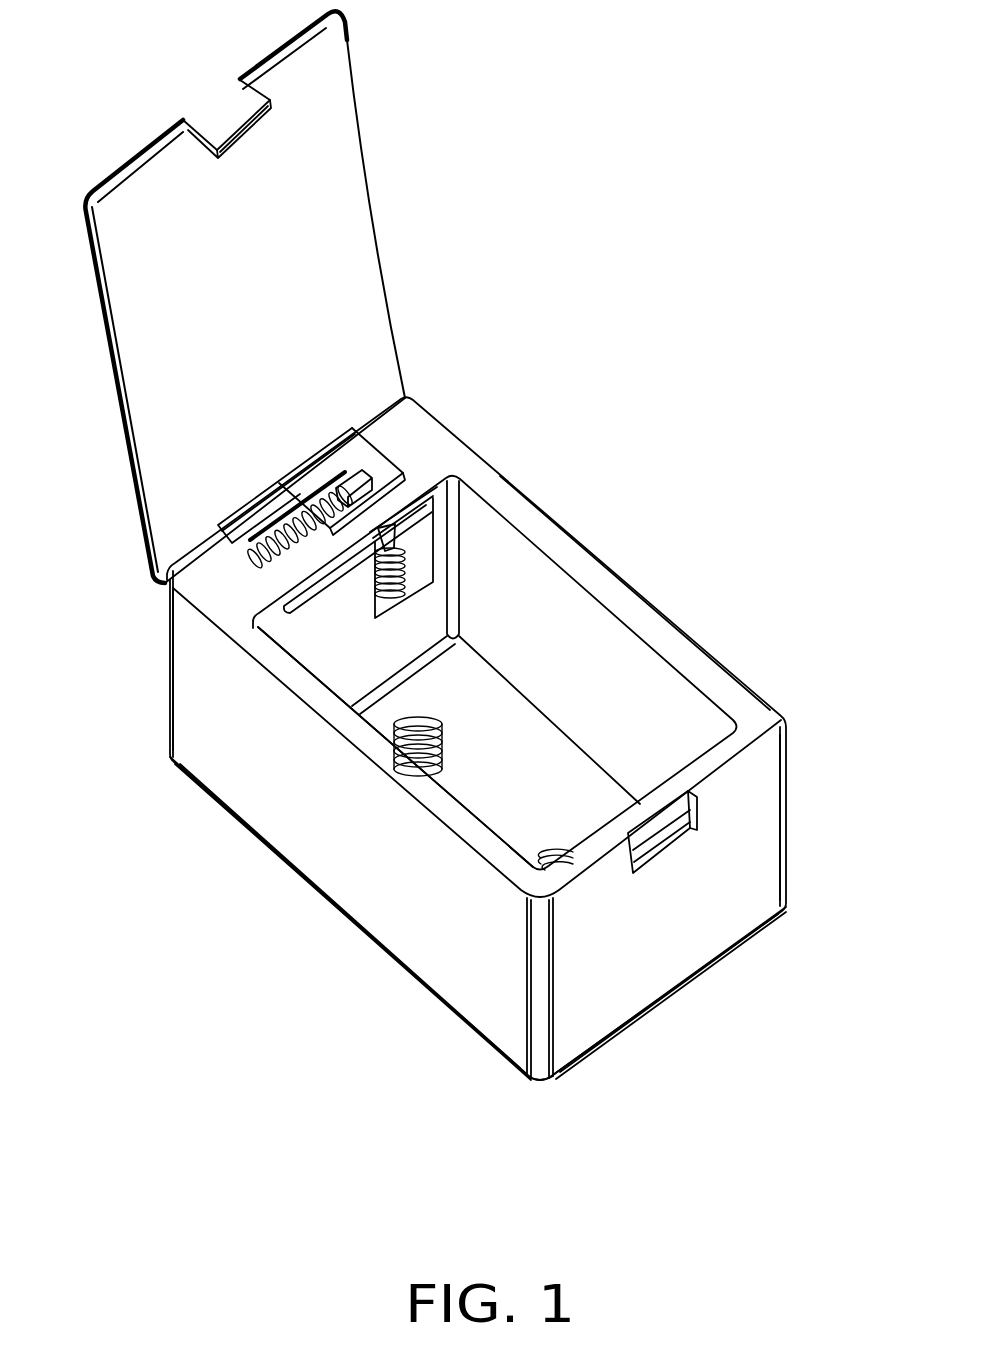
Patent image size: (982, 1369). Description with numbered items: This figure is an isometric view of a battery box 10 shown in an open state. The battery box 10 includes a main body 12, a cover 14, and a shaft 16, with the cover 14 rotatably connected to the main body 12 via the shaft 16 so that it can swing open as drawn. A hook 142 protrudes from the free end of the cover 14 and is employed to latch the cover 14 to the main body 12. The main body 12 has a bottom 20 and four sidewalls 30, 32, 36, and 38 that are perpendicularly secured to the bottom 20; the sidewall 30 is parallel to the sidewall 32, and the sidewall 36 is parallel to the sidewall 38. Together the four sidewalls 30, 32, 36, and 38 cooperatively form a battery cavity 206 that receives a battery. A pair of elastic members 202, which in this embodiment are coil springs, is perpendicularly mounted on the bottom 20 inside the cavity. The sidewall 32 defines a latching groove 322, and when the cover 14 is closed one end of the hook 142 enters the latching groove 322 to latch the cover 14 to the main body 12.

The battery box 10 is at (697, 180).
The main body 12 is at (483, 550).
The cover 14 is at (321, 368).
The hook 142 is at (217, 122).
The shaft 16 is at (334, 439).
The bottom 20 is at (527, 790).
The elastic members 202 is at (430, 728).
The battery cavity 206 is at (487, 776).
The sidewall 30 is at (230, 594).
The sidewall 32 is at (600, 987).
The latching groove 322 is at (660, 818).
The sidewall 36 is at (620, 577).
The sidewall 38 is at (315, 820).